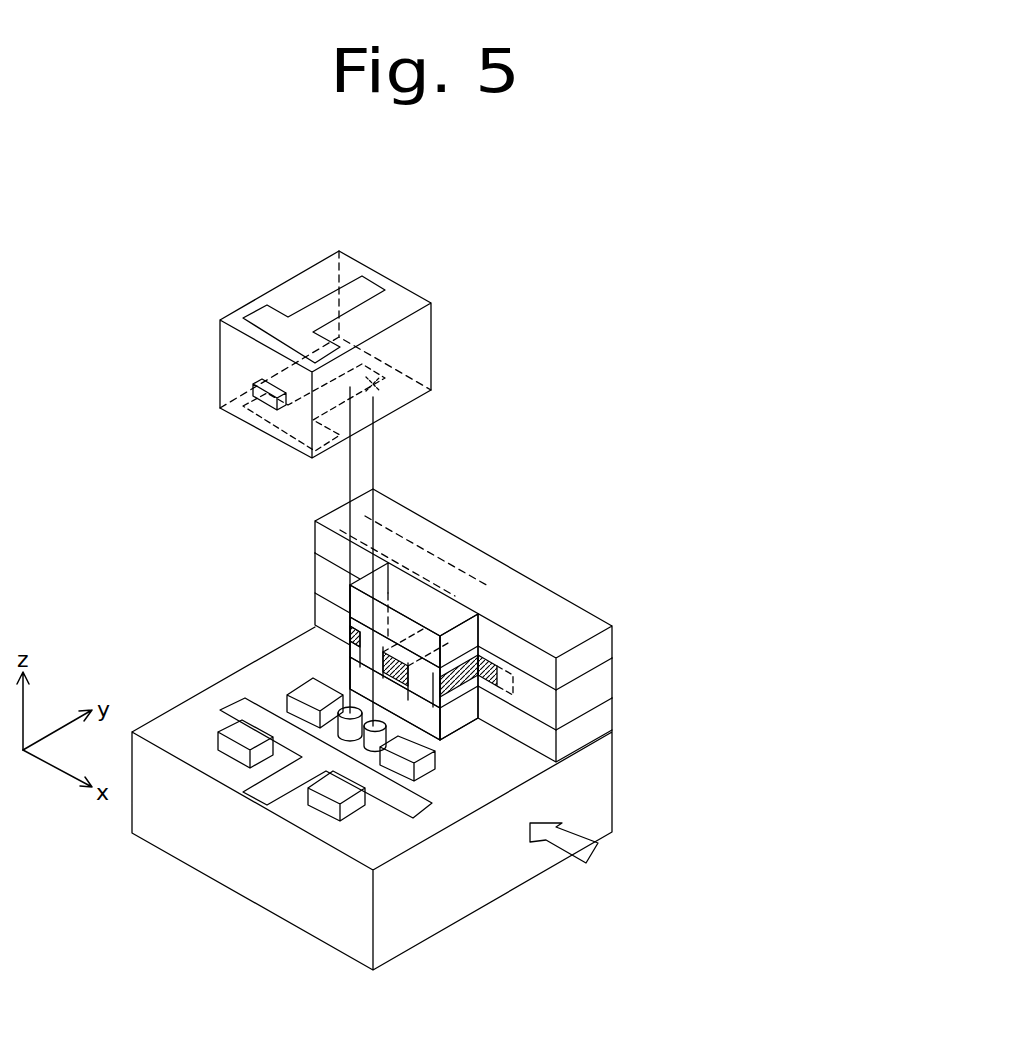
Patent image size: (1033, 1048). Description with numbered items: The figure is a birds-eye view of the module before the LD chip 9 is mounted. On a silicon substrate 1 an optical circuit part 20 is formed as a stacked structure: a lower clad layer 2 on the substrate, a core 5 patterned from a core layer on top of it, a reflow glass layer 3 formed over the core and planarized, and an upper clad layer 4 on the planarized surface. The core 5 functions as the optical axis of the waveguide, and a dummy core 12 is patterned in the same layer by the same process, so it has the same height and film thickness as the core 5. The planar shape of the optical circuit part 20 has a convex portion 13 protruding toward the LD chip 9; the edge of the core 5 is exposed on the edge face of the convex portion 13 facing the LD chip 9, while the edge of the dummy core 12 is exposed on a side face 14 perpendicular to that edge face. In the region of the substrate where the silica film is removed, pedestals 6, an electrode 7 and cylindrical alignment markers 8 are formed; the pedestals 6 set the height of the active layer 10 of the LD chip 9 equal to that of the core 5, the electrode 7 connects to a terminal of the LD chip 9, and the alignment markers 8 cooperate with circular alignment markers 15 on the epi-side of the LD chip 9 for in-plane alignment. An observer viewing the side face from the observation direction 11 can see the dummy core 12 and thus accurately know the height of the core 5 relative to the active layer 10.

The silicon substrate 1 is at (602, 800).
The lower clad layer 2 is at (602, 722).
The reflow glass layer 3 is at (602, 688).
The upper clad layer 4 is at (602, 647).
The core 5 is at (403, 678).
The pedestals 6 is at (353, 807).
The electrode 7 is at (255, 713).
The alignment markers 8 is at (353, 717).
The LD chip 9 is at (312, 283).
The active layer 10 is at (253, 392).
The observation direction 11 is at (598, 857).
The dummy core 12 is at (467, 625).
The convex portion 13 is at (420, 598).
The side face 14 is at (490, 705).
The alignment markers 15 is at (398, 405).
The optical circuit part 20 is at (276, 562).